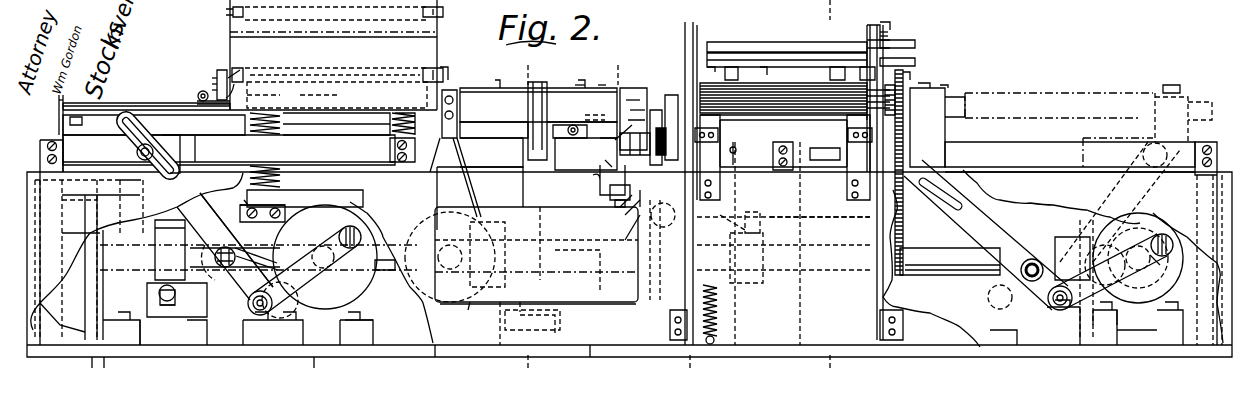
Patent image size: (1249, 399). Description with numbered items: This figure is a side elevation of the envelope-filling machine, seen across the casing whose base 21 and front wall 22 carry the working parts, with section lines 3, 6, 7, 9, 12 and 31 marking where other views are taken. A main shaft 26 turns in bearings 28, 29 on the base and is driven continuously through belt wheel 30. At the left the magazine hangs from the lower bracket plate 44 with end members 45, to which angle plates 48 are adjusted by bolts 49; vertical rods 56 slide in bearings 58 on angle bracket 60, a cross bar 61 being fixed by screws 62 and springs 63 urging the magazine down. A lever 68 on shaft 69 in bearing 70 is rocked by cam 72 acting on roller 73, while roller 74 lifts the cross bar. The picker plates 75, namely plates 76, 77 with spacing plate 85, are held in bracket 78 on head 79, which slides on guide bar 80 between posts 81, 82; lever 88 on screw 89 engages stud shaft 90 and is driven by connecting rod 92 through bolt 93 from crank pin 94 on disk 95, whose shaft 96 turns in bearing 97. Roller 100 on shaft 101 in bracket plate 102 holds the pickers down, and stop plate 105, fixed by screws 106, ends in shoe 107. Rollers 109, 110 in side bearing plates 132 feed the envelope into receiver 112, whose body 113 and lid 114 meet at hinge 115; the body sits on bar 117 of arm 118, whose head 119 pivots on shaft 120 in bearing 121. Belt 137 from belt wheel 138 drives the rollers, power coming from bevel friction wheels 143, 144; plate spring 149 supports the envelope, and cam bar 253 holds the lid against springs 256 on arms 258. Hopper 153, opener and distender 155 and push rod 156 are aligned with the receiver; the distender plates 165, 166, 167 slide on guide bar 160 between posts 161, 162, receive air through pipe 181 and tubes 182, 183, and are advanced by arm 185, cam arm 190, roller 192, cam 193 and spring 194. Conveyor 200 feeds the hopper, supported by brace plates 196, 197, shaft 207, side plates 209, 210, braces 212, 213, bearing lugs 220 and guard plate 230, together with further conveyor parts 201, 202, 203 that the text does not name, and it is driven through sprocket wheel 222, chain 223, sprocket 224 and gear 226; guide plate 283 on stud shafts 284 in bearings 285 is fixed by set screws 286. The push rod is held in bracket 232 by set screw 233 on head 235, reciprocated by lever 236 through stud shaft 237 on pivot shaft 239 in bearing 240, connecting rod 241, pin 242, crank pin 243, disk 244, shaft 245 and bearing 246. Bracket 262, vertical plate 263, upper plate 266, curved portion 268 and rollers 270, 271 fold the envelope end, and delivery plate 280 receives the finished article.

The section line 3 is at (64, 97).
The section line 6 is at (426, 365).
The section line 7 is at (522, 60).
The section line 9 is at (610, 60).
The section line 12 is at (812, 12).
The base 21 is at (324, 364).
The front wall 22 is at (1005, 195).
The main shaft 26 is at (382, 280).
The bearing 28 is at (155, 320).
The bearing 29 is at (1060, 237).
The belt wheel 30 is at (62, 317).
The belt 31 is at (95, 364).
The lower bracket plate 44 is at (375, 70).
The end member 45 is at (220, 70).
The angle plate 48 is at (447, 62).
The bolt 49 is at (452, 70).
The vertical rod 56 is at (250, 128).
The bearing 58 is at (336, 123).
The angle bracket 60 is at (248, 118).
The cross bar 61 is at (322, 195).
The screw 62 is at (256, 198).
The spring 63 is at (283, 130).
The lever 68 is at (250, 245).
The shaft 69 is at (215, 245).
The bearing 70 is at (225, 335).
The cam 72 is at (165, 225).
The roller 73 is at (170, 318).
The roller 74 is at (342, 218).
The picker plates 75 is at (120, 103).
The picker plate 76 is at (146, 103).
The picker plate 77 is at (166, 135).
The bracket 78 is at (85, 123).
The head 79 is at (80, 140).
The guide bar 80 is at (205, 148).
The post 81 is at (40, 150).
The post 82 is at (385, 140).
The spacing plate 85 is at (85, 103).
The lever 88 is at (140, 136).
The screw 89 is at (230, 247).
The stud shaft 90 is at (137, 155).
The connecting rod 92 is at (305, 282).
The bolt 93 is at (272, 310).
The crank pin 94 is at (360, 245).
The disk 95 is at (359, 313).
The shaft 96 is at (350, 298).
The bearing 97 is at (350, 338).
The roller 100 is at (200, 95).
The shaft 101 is at (198, 95).
The bracket plate 102 is at (212, 90).
The stop plate 105 is at (212, 84).
The screw 106 is at (212, 78).
The shoe 107 is at (240, 72).
The roller 109 is at (452, 138).
The roller 110 is at (453, 88).
The receiver 112 is at (508, 92).
The body 113 is at (570, 138).
The lid 114 is at (565, 92).
The hinge 115 is at (586, 86).
The bar 117 is at (478, 140).
The arm 118 is at (550, 185).
The head 119 is at (560, 322).
The shaft 120 is at (595, 303).
The bearing 121 is at (590, 358).
The side bearing plate 132 is at (444, 155).
The belt 137 is at (470, 181).
The belt wheel 138 is at (449, 266).
The bevel friction wheel 143 is at (455, 205).
The bevel friction wheel 144 is at (490, 185).
The plate spring 149 is at (580, 132).
The hopper 153 is at (783, 120).
The envelope opener and distender 155 is at (680, 60).
The push rod 156 is at (612, 95).
The guide bar 160 is at (1010, 148).
The post 161 is at (772, 150).
The post 162 is at (1206, 142).
The segmental plate 165 is at (656, 88).
The segmental plate 166 is at (630, 124).
The segmental plate 167 is at (633, 103).
The air supply pipe 181 is at (612, 197).
The flexible tube 182 is at (598, 185).
The flexible tube 183 is at (625, 210).
The arm 185 is at (640, 215).
The cam arm 190 is at (800, 217).
The roller 192 is at (750, 212).
The cam 193 is at (747, 283).
The spring 194 is at (718, 315).
The brace plate 196 is at (720, 180).
The brace plate 197 is at (847, 190).
The conveyor 200 is at (752, 42).
The roller 201 is at (710, 42).
The plate 202 is at (878, 28).
The roller 203 is at (762, 67).
The shaft 207 is at (792, 67).
The side plate 209 is at (700, 28).
The side plate 210 is at (885, 30).
The brace 212 is at (690, 28).
The brace 213 is at (722, 128).
The bearing lug 220 is at (730, 67).
The sprocket wheel 222 is at (908, 278).
The sprocket chain 223 is at (950, 250).
The sprocket wheel 224 is at (905, 80).
The gear wheel 226 is at (900, 80).
The guard plate 230 is at (822, 67).
The bracket 232 is at (1153, 95).
The set screw 233 is at (930, 90).
The head 235 is at (825, 148).
The lever 236 is at (968, 217).
The stud shaft 237 is at (911, 172).
The pivot shaft 239 is at (1032, 258).
The bearing 240 is at (1005, 310).
The connecting rod 241 is at (1104, 313).
The pivot pin 242 is at (1106, 317).
The crank pin 243 is at (1160, 275).
The disk 244 is at (1171, 284).
The shaft 245 is at (1107, 278).
The bearing 246 is at (1120, 335).
The cam bar 253 is at (550, 82).
The spring 256 is at (608, 80).
The arm 258 is at (582, 80).
The bracket 262 is at (640, 205).
The vertical plate 263 is at (668, 90).
The upper plate 266 is at (635, 90).
The upwardly curved portion 268 is at (620, 145).
The roller 270 is at (592, 194).
The roller 271 is at (612, 159).
The delivery plate 280 is at (475, 307).
The side guide plate 283 is at (886, 24).
The stud shaft 284 is at (915, 44).
The bearing 285 is at (886, 38).
The set screw 286 is at (886, 32).